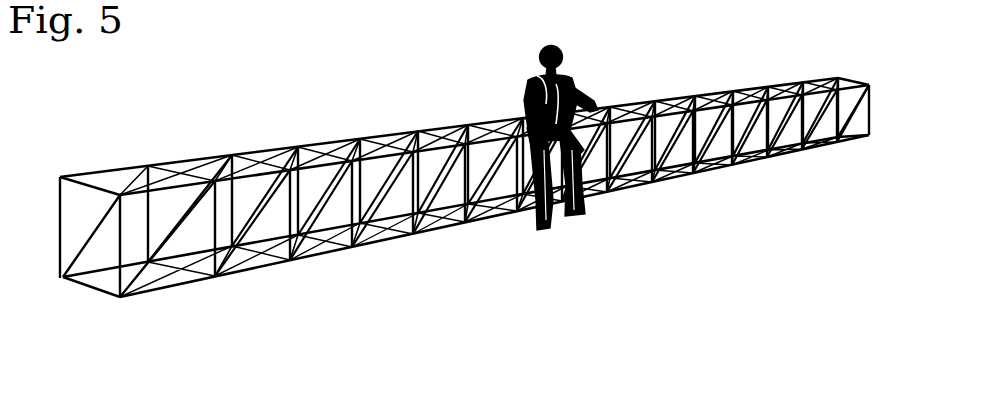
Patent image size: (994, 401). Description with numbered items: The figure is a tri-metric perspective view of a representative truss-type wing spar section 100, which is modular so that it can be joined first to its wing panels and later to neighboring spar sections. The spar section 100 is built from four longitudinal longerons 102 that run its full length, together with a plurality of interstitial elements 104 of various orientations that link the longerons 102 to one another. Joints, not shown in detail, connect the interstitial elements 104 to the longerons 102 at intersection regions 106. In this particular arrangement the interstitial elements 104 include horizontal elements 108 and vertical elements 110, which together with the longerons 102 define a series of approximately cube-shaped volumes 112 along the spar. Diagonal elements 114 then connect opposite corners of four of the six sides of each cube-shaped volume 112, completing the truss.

The wing spar section 100 is at (439, 205).
The longerons 102 is at (312, 165).
The interstitial elements 104 is at (59, 247).
The intersection regions 106 is at (157, 145).
The horizontal elements 108 is at (378, 229).
The vertical elements 110 is at (340, 207).
The cube-shaped volumes 112 is at (382, 105).
The diagonal elements 114 is at (430, 187).